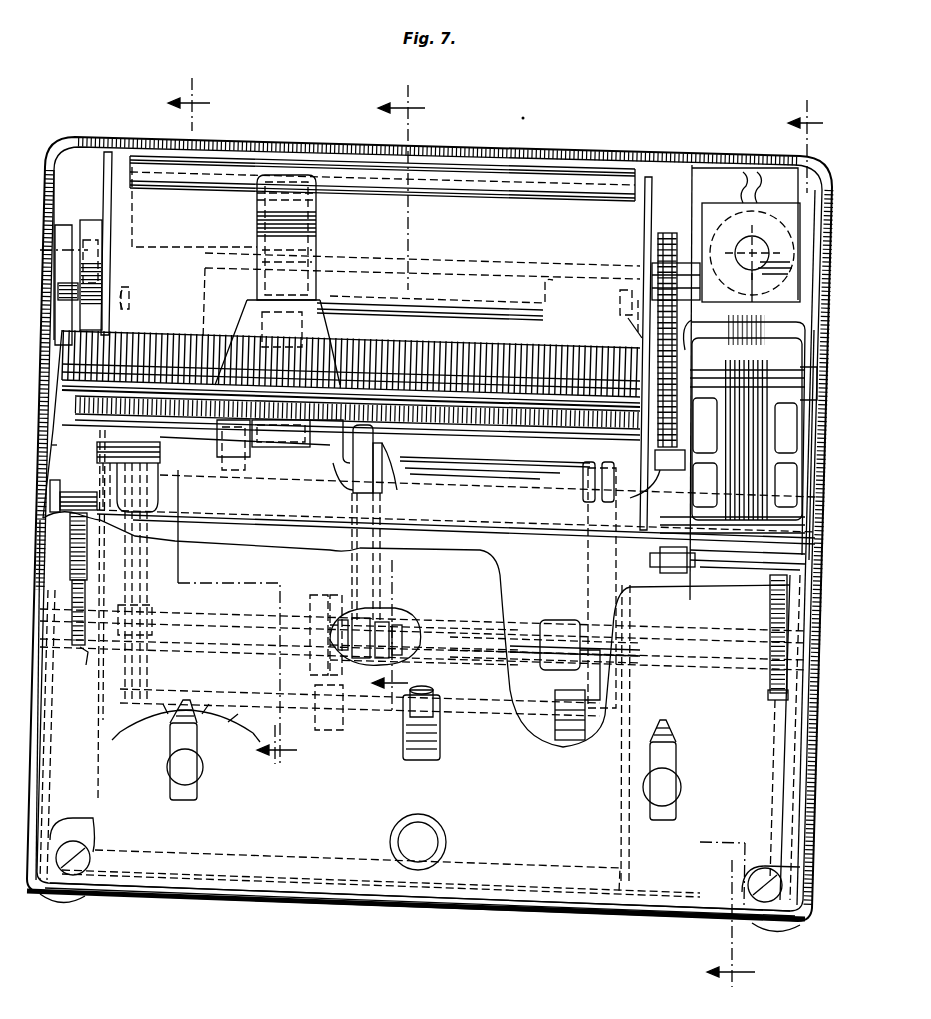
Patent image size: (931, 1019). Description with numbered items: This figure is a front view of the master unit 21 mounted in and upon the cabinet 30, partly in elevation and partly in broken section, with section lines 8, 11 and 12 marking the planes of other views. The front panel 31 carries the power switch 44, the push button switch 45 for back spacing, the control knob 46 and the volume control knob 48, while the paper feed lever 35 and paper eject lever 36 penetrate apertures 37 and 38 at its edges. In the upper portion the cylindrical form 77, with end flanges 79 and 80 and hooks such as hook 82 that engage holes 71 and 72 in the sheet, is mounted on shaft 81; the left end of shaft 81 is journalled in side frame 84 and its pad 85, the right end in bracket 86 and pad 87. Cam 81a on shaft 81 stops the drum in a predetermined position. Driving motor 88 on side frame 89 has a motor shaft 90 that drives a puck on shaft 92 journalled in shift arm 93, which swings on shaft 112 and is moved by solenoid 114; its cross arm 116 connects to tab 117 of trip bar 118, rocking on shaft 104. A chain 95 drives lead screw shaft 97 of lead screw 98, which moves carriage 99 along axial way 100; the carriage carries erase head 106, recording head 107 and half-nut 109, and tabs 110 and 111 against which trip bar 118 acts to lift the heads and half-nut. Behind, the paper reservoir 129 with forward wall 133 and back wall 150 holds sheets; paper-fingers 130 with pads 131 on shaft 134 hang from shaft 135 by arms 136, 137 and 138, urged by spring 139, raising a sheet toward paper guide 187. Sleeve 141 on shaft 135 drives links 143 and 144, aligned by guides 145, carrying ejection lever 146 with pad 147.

The cabinet 30 is at (62, 137).
The end flange 80 is at (110, 152).
The cylindrical form 77 is at (102, 194).
The pad 85 is at (63, 240).
The cam 81a is at (92, 232).
The shaft 81 is at (78, 268).
The lead screw shaft 97 is at (90, 312).
The hole 71 is at (128, 292).
The hook 82 is at (129, 307).
The erase head 106 is at (258, 206).
The recording head 107 is at (240, 264).
The half-nut 109 is at (283, 330).
The carriage 99 is at (322, 320).
The paper guide 187 is at (590, 190).
The end flange 79 is at (650, 177).
The bracket 86 is at (692, 165).
The pad 87 is at (678, 233).
The solenoid 114 is at (751, 237).
The chain 95 is at (652, 292).
The hole 72 is at (618, 298).
The lead screw 98 is at (575, 333).
The shift arm 93 is at (620, 322).
The shaft 92 is at (623, 333).
The driving motor 88 is at (785, 332).
The side frame 89 is at (818, 347).
The back wall 150 is at (560, 278).
The side frame 84 is at (191, 446).
The shaft 104 is at (73, 492).
The tab 111 is at (225, 435).
The tab 110 is at (318, 450).
The ejection lever 146 is at (378, 437).
The pad 147 is at (435, 425).
The trip bar 118 is at (478, 470).
The axial way 100 is at (530, 428).
The motor shaft 90 is at (640, 437).
The cross arm 116 is at (657, 474).
The tab 117 is at (624, 500).
The pad 131 is at (165, 488).
The paper-finger 130 is at (155, 527).
The link 144 is at (352, 530).
The guide 145 is at (353, 487).
The link 143 is at (385, 538).
The paper feed lever 35 is at (88, 545).
The arm 136 is at (125, 614).
The shaft 135 is at (247, 607).
The spring 139 is at (150, 653).
The arm 137 is at (325, 682).
The sleeve 141 is at (522, 630).
The arm 138 is at (575, 680).
The shaft 112 is at (708, 582).
The paper eject lever 36 is at (770, 618).
The aperture 37 is at (84, 650).
The aperture 38 is at (775, 685).
The power switch 44 is at (403, 735).
The control knob 46 is at (178, 770).
The volume control knob 48 is at (662, 805).
The push button switch 45 is at (430, 840).
The shaft 134 is at (548, 735).
The forward wall 133 is at (245, 865).
The front panel 31 is at (515, 872).
The paper reservoir 129 is at (562, 898).
The master unit 21 is at (660, 908).
The section line 8 is at (766, 543).
The section line 11 is at (243, 421).
The section line 12 is at (409, 398).